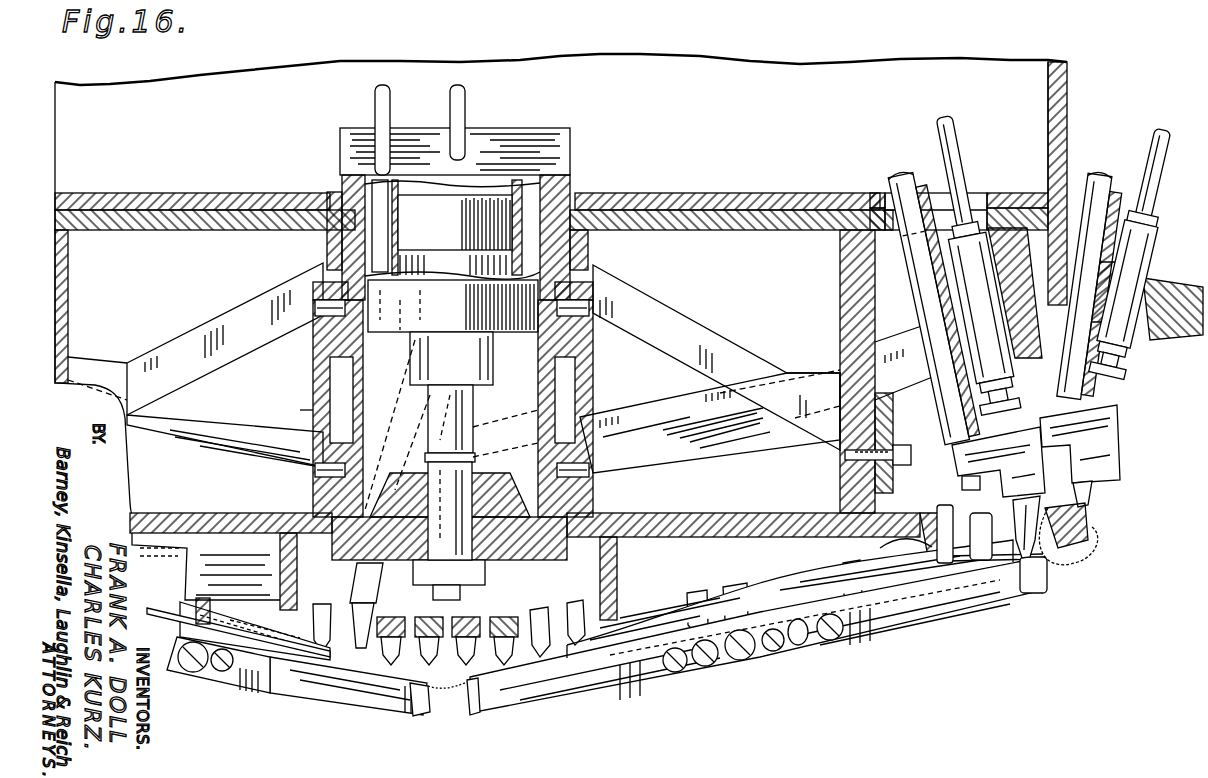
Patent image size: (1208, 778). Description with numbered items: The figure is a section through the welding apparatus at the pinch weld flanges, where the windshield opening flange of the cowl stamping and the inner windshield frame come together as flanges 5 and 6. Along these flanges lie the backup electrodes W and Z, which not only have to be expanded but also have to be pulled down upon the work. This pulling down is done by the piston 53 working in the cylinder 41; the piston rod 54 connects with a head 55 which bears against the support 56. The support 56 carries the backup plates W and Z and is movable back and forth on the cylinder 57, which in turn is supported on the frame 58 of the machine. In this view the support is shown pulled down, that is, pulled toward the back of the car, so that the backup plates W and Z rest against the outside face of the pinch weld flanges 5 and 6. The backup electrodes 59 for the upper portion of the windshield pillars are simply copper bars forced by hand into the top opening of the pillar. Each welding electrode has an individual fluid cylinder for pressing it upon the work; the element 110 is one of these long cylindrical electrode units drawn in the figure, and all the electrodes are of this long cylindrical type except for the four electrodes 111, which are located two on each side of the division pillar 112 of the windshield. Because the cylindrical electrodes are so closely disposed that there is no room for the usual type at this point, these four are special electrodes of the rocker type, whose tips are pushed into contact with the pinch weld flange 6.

The cylinder 41 is at (363, 197).
The piston 53 is at (463, 205).
The frame 58 is at (677, 195).
The feed pin 110 is at (990, 247).
The cylinder 57 is at (580, 387).
The piston rod 54 is at (478, 410).
The support 56 is at (770, 527).
The head 55 is at (517, 560).
The pinch weld flange 6 is at (1003, 547).
The backup electrode 59 is at (1093, 527).
The pinch weld flange 5 is at (1047, 572).
The backup electrode Z is at (921, 623).
The backup electrode W is at (727, 663).
The rocker type electrode 111 is at (437, 700).
The division pillar 112 is at (457, 690).